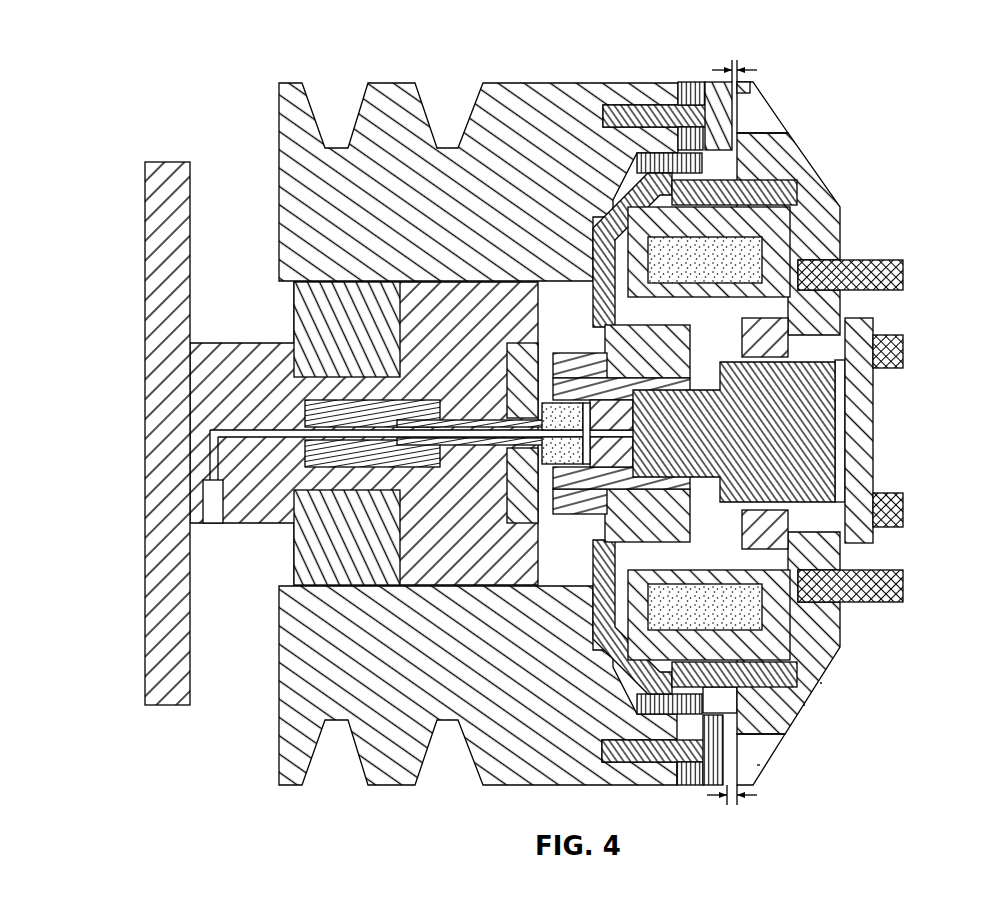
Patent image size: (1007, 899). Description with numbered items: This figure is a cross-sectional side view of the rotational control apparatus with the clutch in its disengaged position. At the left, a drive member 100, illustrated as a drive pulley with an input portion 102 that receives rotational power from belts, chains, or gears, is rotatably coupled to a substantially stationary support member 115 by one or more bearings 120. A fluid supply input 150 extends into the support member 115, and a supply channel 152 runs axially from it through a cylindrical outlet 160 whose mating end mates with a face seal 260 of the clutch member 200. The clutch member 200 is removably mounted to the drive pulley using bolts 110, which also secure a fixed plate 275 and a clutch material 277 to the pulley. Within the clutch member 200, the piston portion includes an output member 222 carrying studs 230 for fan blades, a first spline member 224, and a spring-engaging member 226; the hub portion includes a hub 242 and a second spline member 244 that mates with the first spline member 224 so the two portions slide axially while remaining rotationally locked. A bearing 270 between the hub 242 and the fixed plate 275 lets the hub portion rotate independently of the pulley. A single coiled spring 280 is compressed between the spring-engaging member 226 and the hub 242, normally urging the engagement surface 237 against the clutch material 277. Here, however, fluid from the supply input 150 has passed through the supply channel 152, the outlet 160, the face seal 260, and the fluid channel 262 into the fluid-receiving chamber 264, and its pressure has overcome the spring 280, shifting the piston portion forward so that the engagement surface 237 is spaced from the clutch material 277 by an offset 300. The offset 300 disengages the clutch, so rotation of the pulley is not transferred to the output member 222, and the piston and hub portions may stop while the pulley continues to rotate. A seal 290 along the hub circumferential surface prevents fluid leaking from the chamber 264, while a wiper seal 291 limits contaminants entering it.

The drive member 100 is at (448, 435).
The input portion 102 is at (363, 102).
The bolts 110 is at (607, 100).
The support member 115 is at (146, 216).
The bearings 120 is at (298, 328).
The fluid supply input 150 is at (210, 517).
The supply channel 152 is at (232, 435).
The cylindrical outlet 160 is at (397, 425).
The clutch member 200 is at (761, 432).
The output member 222 is at (800, 160).
The first spline member 224 is at (828, 343).
The spring-engaging member 226 is at (637, 600).
The studs 230 is at (905, 275).
The engagement surface 237 is at (757, 765).
The hub 242 is at (805, 212).
The second spline member 244 is at (818, 458).
The face seal 260 is at (547, 458).
The fluid channel 262 is at (818, 432).
The fluid-receiving chamber 264 is at (800, 240).
The bearing 270 is at (617, 347).
The fixed plate 275 is at (537, 92).
The clutch material 277 is at (718, 785).
The spring 280 is at (828, 648).
The seal 290 is at (820, 683).
The wiper seal 291 is at (803, 705).
The offset 300 is at (732, 65).